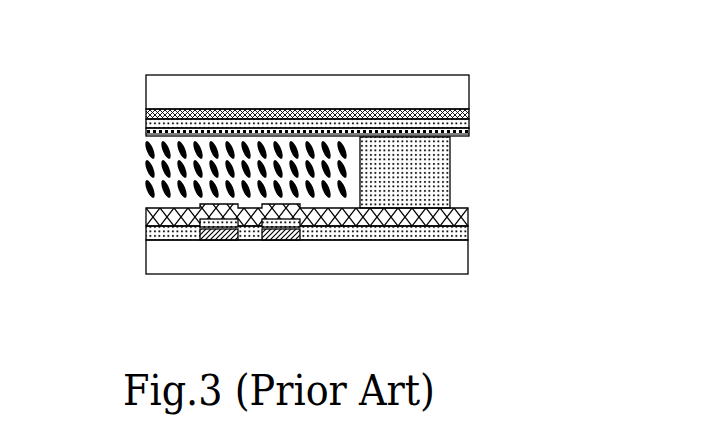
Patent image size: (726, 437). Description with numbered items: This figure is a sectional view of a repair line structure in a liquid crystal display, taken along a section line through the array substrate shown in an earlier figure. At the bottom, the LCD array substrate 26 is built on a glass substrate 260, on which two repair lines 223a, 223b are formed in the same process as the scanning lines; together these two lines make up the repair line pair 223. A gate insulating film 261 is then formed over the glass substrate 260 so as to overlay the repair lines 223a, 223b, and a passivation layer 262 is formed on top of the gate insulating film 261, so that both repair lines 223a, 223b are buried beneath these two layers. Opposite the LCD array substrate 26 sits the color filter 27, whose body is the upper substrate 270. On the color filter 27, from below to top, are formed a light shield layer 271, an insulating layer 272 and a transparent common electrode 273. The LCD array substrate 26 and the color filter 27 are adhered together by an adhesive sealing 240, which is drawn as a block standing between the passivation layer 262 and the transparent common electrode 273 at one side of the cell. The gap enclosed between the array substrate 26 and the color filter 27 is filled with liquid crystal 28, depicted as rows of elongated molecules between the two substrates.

The color filter 27 is at (312, 82).
The upper substrate 270 is at (438, 89).
The light shield layer 271 is at (470, 108).
The insulating layer 272 is at (466, 122).
The transparent common electrode 273 is at (462, 131).
The liquid crystal molecules 28 is at (150, 170).
The adhesive sealing 240 is at (437, 173).
The LCD array substrate 26 is at (300, 282).
The glass substrate 260 is at (452, 268).
The gate insulating film 261 is at (450, 234).
The passivation layer 262 is at (456, 211).
The electrode pair 223 is at (238, 295).
The repair line 223a is at (220, 240).
The repair line 223b is at (281, 240).